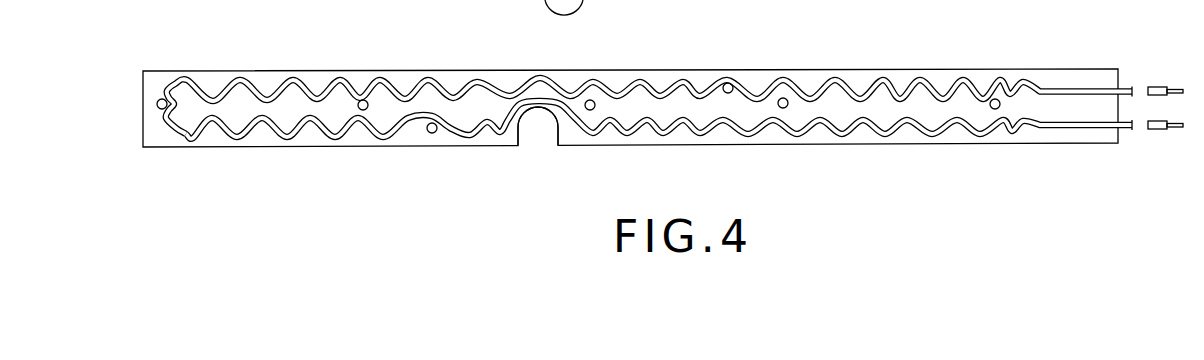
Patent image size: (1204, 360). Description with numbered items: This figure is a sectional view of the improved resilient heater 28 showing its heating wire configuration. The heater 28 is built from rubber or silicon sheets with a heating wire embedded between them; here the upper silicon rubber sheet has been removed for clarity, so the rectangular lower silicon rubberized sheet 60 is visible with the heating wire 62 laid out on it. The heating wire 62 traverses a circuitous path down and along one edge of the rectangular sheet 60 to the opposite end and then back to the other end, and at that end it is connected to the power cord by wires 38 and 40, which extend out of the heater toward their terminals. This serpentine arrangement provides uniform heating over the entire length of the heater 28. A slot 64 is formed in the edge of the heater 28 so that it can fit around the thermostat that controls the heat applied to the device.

The heater 28 is at (707, 149).
The wire 38 is at (1160, 86).
The wire 40 is at (1158, 131).
The silicon rubberized sheet 60 is at (820, 146).
The heating wire 62 is at (924, 133).
The slot 64 is at (521, 147).